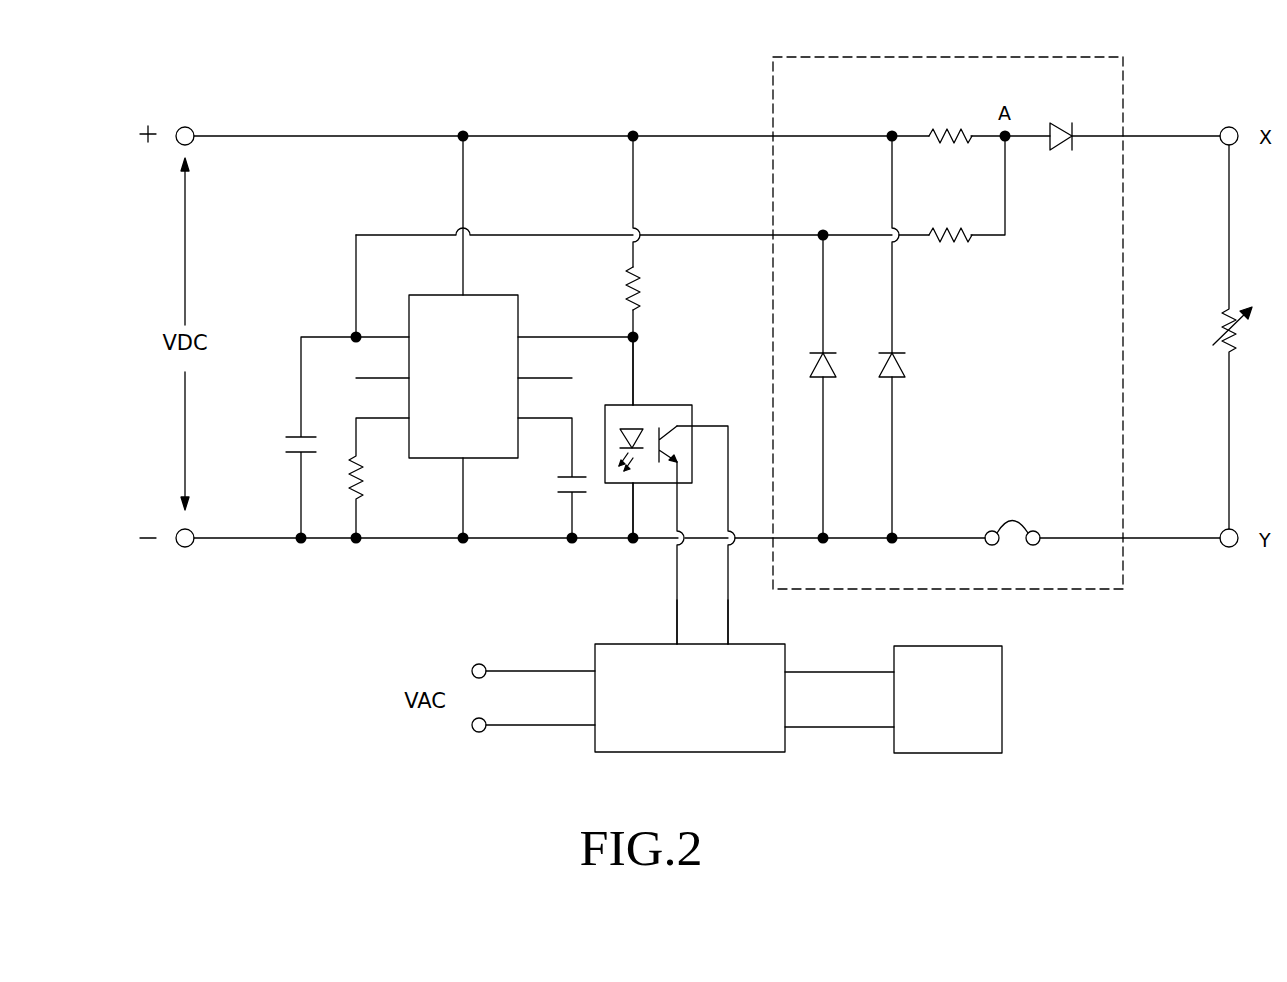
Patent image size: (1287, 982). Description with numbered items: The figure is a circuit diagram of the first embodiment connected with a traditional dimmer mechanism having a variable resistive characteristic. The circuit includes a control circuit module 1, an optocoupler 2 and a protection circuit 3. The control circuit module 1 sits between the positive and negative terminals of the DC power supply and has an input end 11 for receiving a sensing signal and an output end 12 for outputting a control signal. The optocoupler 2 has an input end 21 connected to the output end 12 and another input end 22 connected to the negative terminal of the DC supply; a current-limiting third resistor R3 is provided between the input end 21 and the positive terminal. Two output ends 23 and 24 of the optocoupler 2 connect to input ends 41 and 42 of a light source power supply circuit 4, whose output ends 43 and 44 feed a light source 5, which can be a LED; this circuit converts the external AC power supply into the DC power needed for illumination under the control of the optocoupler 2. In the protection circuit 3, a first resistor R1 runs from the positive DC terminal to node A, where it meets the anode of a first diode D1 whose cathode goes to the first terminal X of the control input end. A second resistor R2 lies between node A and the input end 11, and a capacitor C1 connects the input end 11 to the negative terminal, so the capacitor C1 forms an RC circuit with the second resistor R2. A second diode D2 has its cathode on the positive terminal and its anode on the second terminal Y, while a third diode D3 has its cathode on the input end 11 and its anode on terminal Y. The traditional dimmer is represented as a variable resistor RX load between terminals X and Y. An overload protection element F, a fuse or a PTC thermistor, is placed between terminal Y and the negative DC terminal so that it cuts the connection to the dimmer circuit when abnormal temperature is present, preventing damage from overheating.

The control circuit module 1 is at (435, 458).
The optocoupler 2 is at (668, 404).
The protection circuit 3 is at (1117, 589).
The light source power supply circuit 4 is at (593, 652).
The light source 5 is at (1002, 688).
The input end 11 is at (382, 323).
The output end 12 is at (575, 323).
The input end 21 is at (618, 371).
The input end 22 is at (617, 510).
The output end 23 is at (706, 522).
The output end 24 is at (695, 553).
The input end 41 is at (662, 622).
The input end 42 is at (746, 622).
The output end 43 is at (839, 659).
The output end 44 is at (839, 741).
The first resistor R1 is at (950, 114).
The second resistor R2 is at (950, 216).
The current-limiting third resistor R3 is at (654, 288).
The first diode D1 is at (1063, 116).
The second diode D2 is at (906, 337).
The third diode D3 is at (837, 386).
The capacitor C1 is at (303, 437).
The variable resistor RX is at (1247, 337).
The overload protection element F is at (1012, 515).